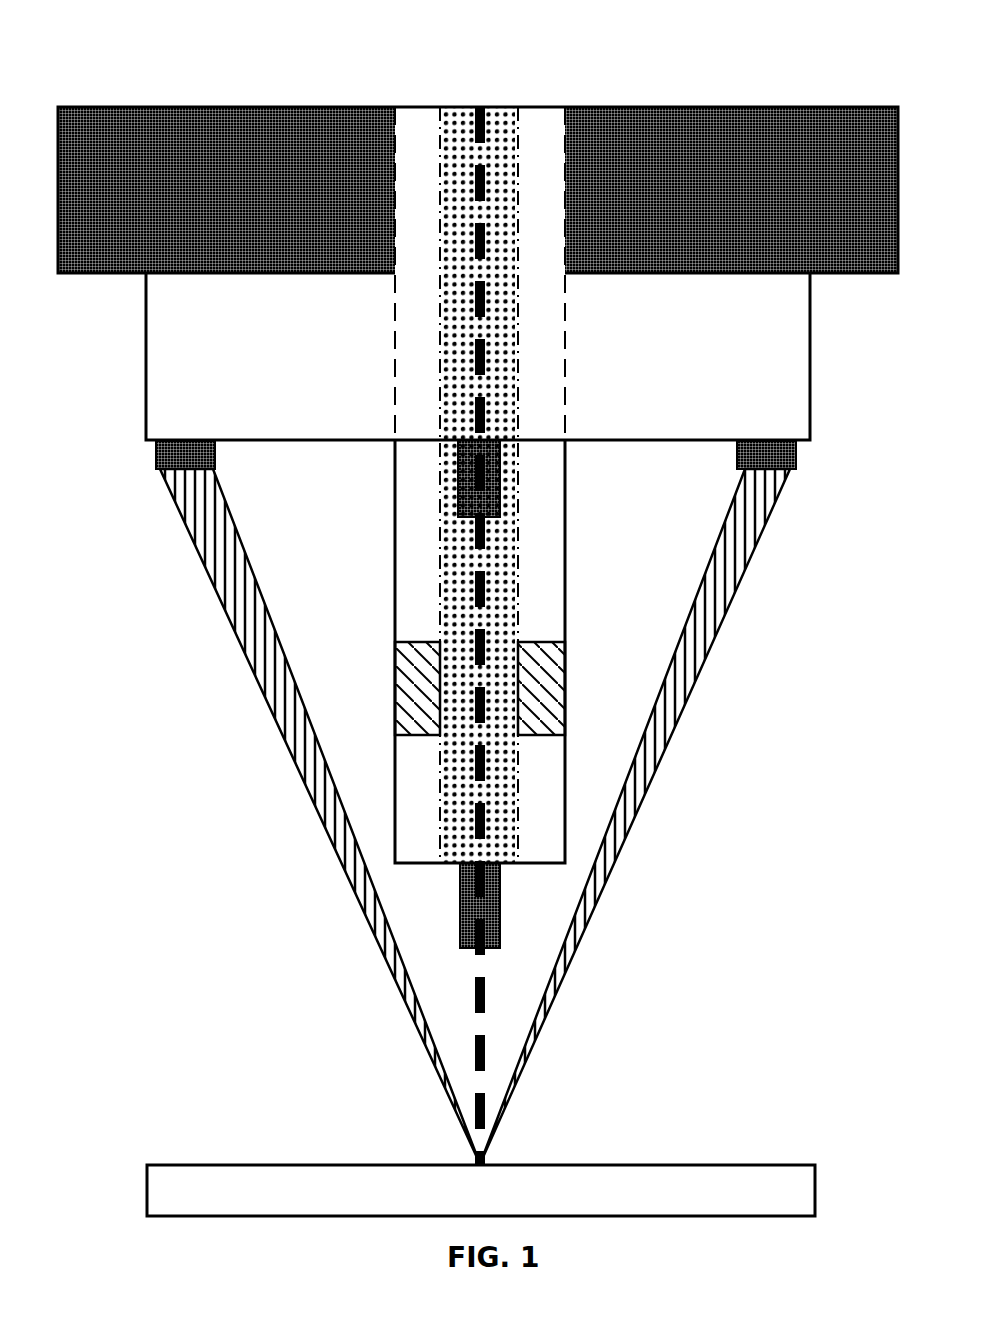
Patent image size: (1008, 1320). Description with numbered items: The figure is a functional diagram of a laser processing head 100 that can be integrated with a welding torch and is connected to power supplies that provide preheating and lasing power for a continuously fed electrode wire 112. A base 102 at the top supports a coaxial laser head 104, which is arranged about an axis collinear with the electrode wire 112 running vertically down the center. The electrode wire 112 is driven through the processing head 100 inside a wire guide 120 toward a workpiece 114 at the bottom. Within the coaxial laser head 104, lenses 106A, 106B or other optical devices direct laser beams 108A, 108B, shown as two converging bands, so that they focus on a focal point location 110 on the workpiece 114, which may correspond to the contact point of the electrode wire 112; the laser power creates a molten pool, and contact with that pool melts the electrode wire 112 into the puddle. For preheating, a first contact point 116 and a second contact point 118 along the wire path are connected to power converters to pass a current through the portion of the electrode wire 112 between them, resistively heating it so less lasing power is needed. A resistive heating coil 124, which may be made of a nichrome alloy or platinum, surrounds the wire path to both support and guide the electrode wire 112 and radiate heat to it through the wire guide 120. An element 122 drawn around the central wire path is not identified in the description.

The laser processing head 100 is at (158, 47).
The base 102 is at (108, 273).
The coaxial laser head 104 is at (146, 362).
The lens 106A is at (160, 470).
The lens 106B is at (792, 470).
The laser beam 108A is at (252, 655).
The laser beam 108B is at (702, 655).
The focal point location 110 is at (456, 1155).
The electrode wire 112 is at (490, 1024).
The workpiece 114 is at (582, 1165).
The first contact point 116 is at (458, 510).
The second contact point 118 is at (460, 940).
The wire guide 120 is at (518, 395).
The nozzle body 122 is at (565, 565).
The resistive heating coil 124 is at (565, 660).